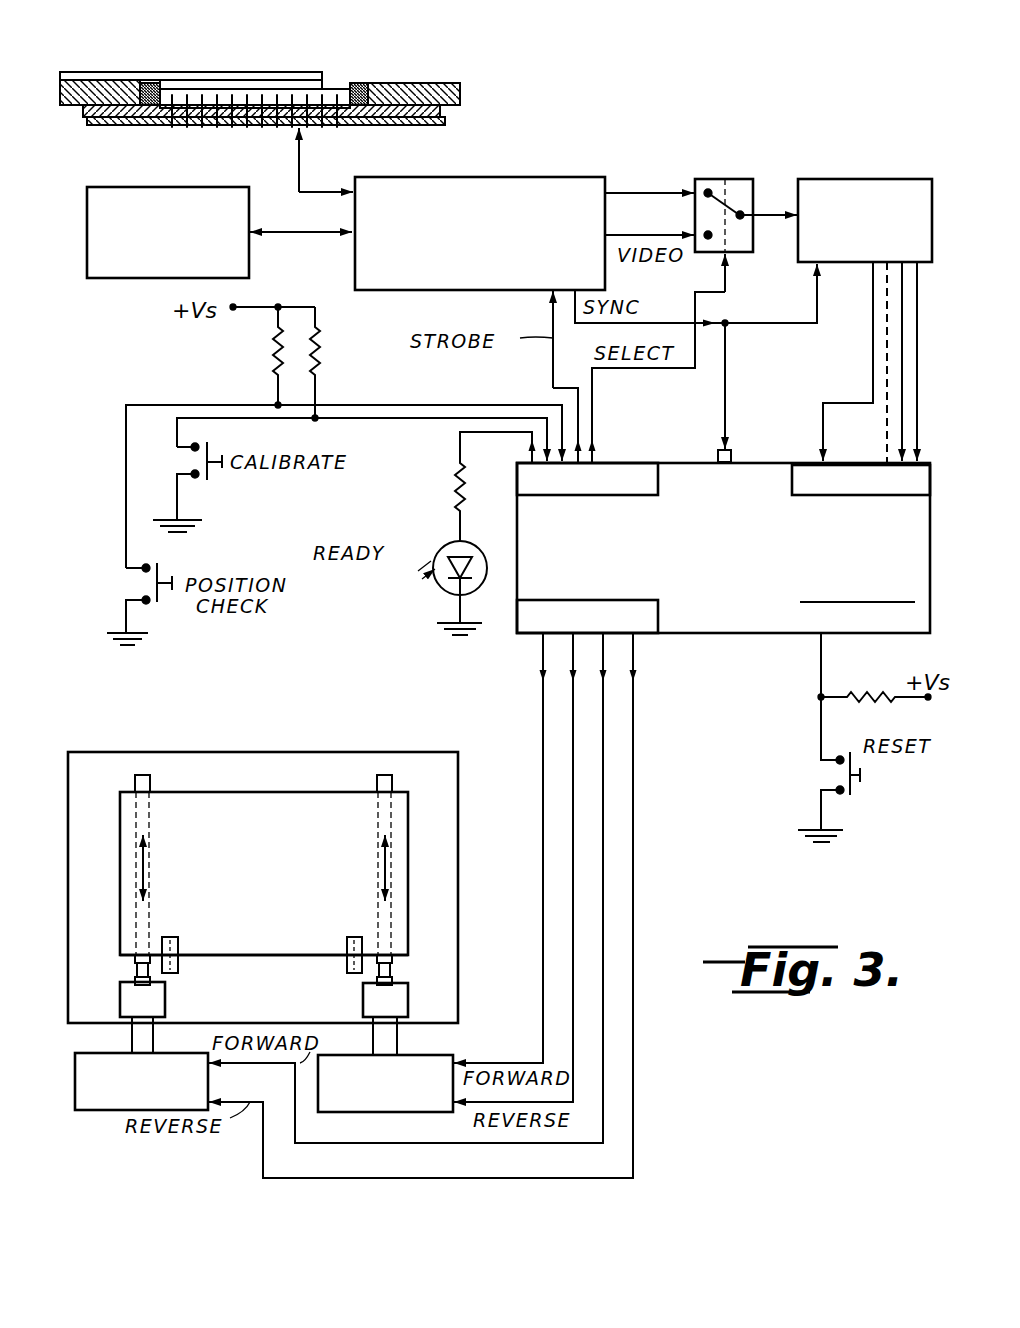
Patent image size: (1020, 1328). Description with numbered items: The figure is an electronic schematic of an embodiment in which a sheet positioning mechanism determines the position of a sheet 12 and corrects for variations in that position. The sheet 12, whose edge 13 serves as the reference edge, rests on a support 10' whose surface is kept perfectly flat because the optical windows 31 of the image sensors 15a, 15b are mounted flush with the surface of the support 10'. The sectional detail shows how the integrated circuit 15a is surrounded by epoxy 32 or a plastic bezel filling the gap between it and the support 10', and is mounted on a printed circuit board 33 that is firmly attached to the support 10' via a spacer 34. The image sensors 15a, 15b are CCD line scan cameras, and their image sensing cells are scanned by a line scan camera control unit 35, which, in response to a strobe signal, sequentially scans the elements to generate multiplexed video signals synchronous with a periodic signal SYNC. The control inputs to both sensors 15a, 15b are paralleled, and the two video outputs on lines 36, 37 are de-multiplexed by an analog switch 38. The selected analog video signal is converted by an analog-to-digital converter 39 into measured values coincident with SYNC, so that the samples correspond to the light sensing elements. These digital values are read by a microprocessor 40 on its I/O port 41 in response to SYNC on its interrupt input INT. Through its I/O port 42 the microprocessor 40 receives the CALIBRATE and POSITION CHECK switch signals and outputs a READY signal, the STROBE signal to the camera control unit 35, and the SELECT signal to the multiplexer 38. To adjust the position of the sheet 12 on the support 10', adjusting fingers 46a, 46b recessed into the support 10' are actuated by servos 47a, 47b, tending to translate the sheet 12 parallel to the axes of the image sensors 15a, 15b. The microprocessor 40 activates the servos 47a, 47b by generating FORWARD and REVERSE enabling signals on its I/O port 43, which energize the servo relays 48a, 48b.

The support 10' is at (267, 539).
The sheet 12 is at (160, 73).
The edge 13 is at (272, 955).
The image sensor 15a is at (313, 98).
The image sensor 15b is at (124, 186).
The optical window 31 is at (240, 85).
The epoxy 32 is at (362, 85).
The printed circuit board 33 is at (395, 125).
The spacer 34 is at (437, 125).
The line scan camera control unit 35 is at (507, 180).
The line 36 is at (647, 191).
The line 37 is at (647, 234).
The analog switch 38 is at (727, 178).
The analog-to-digital converter 39 is at (867, 179).
The microprocessor 40 is at (718, 634).
The I/O port 41 is at (923, 463).
The I/O port 42 is at (623, 462).
The I/O port 43 is at (645, 634).
The adjusting finger 46a is at (142, 775).
The adjusting finger 46b is at (387, 775).
The servo 47a is at (165, 1001).
The servo 47b is at (363, 1000).
The servo relay 48a is at (98, 1110).
The servo relay 48b is at (445, 1055).